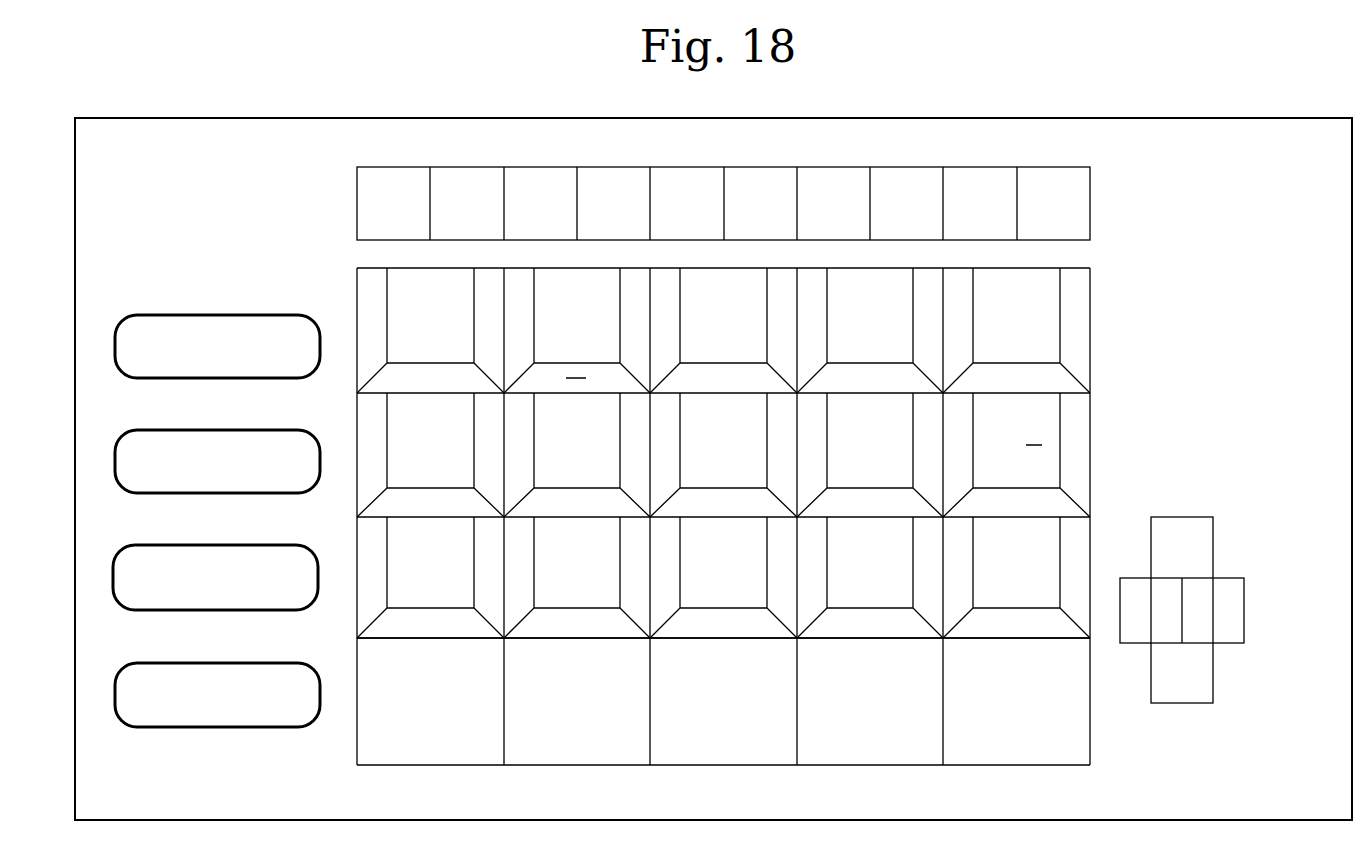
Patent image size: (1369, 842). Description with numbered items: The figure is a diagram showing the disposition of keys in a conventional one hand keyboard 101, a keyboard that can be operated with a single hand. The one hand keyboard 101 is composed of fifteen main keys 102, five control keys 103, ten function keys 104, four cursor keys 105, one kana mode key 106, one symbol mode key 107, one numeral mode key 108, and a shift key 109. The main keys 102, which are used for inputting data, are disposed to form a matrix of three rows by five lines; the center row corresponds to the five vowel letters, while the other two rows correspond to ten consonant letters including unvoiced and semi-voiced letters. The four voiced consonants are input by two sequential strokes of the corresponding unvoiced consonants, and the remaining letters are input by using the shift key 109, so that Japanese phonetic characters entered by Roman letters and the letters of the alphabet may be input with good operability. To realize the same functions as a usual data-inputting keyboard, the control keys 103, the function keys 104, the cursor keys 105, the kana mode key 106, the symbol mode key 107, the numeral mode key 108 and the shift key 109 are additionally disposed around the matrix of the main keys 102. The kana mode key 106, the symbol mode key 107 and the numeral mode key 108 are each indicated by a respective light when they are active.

The one hand keyboard 101 is at (1032, 120).
The main keys 102 is at (1092, 332).
The control keys 103 is at (850, 766).
The function keys 104 is at (1092, 205).
The cursor keys 105 is at (1170, 517).
The kana mode key 106 is at (228, 315).
The symbol mode key 107 is at (218, 430).
The numeral mode key 108 is at (220, 545).
The shift key 109 is at (225, 663).